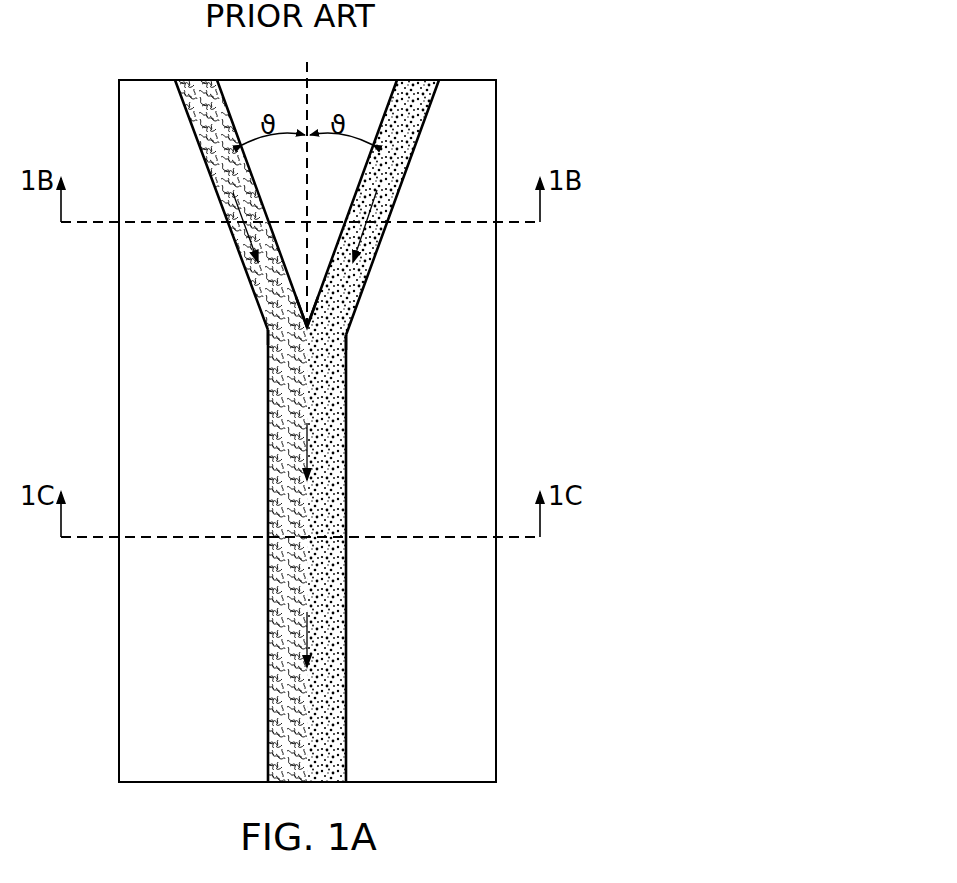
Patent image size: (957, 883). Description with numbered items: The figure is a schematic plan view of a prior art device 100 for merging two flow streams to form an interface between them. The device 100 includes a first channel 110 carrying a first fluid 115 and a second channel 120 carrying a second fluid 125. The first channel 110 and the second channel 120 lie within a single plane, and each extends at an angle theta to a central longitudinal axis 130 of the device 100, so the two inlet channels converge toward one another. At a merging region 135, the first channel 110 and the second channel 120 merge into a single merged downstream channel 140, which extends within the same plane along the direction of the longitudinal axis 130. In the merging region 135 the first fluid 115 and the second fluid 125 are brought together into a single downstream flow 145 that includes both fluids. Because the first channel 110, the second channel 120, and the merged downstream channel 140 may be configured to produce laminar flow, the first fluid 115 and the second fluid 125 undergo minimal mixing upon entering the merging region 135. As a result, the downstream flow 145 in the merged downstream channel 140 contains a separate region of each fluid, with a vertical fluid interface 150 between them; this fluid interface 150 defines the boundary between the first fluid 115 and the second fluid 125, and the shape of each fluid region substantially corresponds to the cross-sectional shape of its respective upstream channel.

The prior art device 100 is at (556, 46).
The first channel 110 is at (185, 115).
The first fluid 115 is at (202, 88).
The second channel 120 is at (430, 110).
The second fluid 125 is at (413, 88).
The central longitudinal axis 130 is at (307, 65).
The merging region 135 is at (346, 338).
The merged downstream channel 140 is at (347, 668).
The downstream flow 145 is at (307, 413).
The fluid interface 150 is at (307, 670).